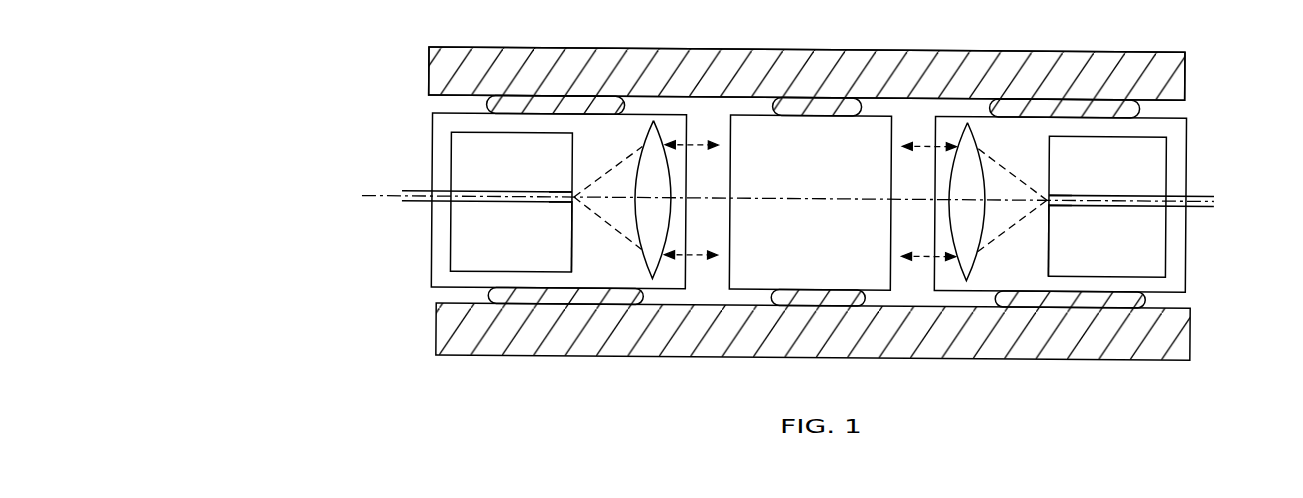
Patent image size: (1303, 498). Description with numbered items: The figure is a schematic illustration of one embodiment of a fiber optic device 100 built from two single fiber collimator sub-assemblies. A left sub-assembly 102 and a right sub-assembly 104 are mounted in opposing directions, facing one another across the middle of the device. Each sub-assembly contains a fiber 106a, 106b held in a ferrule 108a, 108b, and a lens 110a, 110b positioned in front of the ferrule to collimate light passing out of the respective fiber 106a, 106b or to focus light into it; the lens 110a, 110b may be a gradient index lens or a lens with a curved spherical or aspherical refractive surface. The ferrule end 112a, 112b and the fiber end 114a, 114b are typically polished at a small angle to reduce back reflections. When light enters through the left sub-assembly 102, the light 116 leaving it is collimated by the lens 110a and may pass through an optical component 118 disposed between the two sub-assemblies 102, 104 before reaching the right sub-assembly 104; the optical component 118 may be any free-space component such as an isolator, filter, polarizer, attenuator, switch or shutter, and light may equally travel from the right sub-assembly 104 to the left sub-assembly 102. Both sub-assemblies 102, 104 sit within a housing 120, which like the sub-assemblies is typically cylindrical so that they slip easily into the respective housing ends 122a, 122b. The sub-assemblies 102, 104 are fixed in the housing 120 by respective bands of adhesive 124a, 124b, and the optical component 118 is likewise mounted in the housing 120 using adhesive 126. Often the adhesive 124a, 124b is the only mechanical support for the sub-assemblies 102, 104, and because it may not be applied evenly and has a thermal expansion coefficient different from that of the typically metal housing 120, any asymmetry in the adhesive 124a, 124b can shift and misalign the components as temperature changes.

The fiber optic device 100 is at (284, 37).
The left single fiber collimator sub-assembly 102 is at (433, 127).
The right single fiber collimator sub-assembly 104 is at (1190, 135).
The fiber 106a is at (422, 202).
The fiber 106b is at (1200, 202).
The ferrule 108a is at (450, 172).
The ferrule 108b is at (1107, 206).
The lens 110a is at (654, 277).
The lens 110b is at (971, 279).
The ferrule end 112a is at (574, 252).
The ferrule end 112b is at (1050, 262).
The fiber end 114a is at (575, 201).
The fiber end 114b is at (1048, 202).
The light 116 is at (606, 221).
The optical component 118 is at (877, 287).
The housing 120 is at (1126, 47).
The housing end 122a is at (430, 101).
The housing end 122b is at (1175, 105).
The band of adhesive 124a is at (490, 296).
The band of adhesive 124b is at (1145, 297).
The adhesive 126 is at (675, 48).